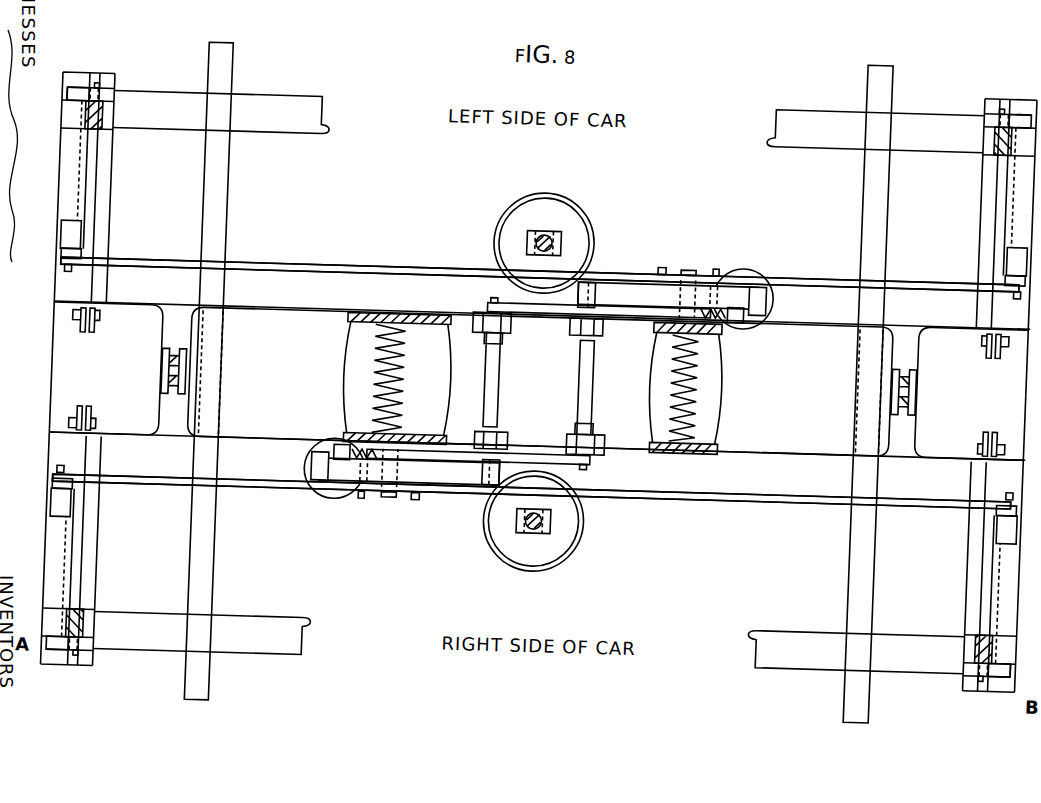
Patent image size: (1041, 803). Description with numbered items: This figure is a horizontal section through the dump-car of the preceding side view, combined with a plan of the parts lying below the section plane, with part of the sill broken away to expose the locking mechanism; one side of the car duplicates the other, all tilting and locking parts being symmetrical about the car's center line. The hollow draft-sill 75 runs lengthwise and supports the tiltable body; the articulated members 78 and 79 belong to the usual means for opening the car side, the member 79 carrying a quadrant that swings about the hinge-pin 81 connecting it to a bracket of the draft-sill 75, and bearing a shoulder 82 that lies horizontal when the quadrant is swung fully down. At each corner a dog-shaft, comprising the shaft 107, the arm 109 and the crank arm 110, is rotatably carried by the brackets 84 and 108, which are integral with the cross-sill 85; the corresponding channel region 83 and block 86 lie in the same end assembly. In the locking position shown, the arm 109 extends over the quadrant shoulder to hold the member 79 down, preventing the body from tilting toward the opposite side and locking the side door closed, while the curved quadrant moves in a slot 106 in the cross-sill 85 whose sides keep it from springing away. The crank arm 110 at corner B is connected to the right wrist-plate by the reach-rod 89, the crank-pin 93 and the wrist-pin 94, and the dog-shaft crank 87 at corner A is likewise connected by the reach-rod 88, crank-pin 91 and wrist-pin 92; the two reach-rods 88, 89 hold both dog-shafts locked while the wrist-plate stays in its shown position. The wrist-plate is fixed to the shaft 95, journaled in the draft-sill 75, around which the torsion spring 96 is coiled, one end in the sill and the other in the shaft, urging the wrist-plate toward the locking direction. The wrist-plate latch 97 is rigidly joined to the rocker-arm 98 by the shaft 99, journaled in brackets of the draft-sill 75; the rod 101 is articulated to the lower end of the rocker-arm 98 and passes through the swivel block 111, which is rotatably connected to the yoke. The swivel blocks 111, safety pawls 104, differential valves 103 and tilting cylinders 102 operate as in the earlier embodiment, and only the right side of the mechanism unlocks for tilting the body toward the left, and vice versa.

The hollow draft-sill 75 is at (538, 381).
The articulated member 78 is at (107, 124).
The articulated member 79 is at (96, 182).
The hinge-pin 81 is at (110, 411).
The shoulder 82 is at (78, 87).
The channel 83 is at (77, 563).
The bracket 84 is at (74, 117).
The cross-sill 85 is at (77, 448).
The bracket block 86 is at (89, 637).
The dog-shaft crank 87 is at (76, 487).
The reach-rod 88 is at (249, 485).
The reach-rod 89 is at (284, 259).
The crank-pin 91 is at (73, 468).
The wrist-pin 92 is at (667, 251).
The crank-pin 93 is at (74, 267).
The wrist-pin 94 is at (722, 249).
The shaft 95 is at (390, 339).
The torsion spring 96 is at (404, 363).
The wrist-plate latch 97 is at (640, 274).
The rocker-arm 98 is at (492, 298).
The shaft 99 is at (599, 352).
The rod 101 is at (652, 296).
The tilting cylinder 102 is at (548, 188).
The differential valve 103 is at (744, 247).
The safety pawl 104 is at (772, 279).
The slot 106 is at (97, 79).
The shaft 107 is at (76, 173).
The bracket 108 is at (76, 232).
The dog-shaft arm 109 is at (89, 96).
The dog-shaft crank arm 110 is at (77, 250).
The swivel block 111 is at (753, 303).